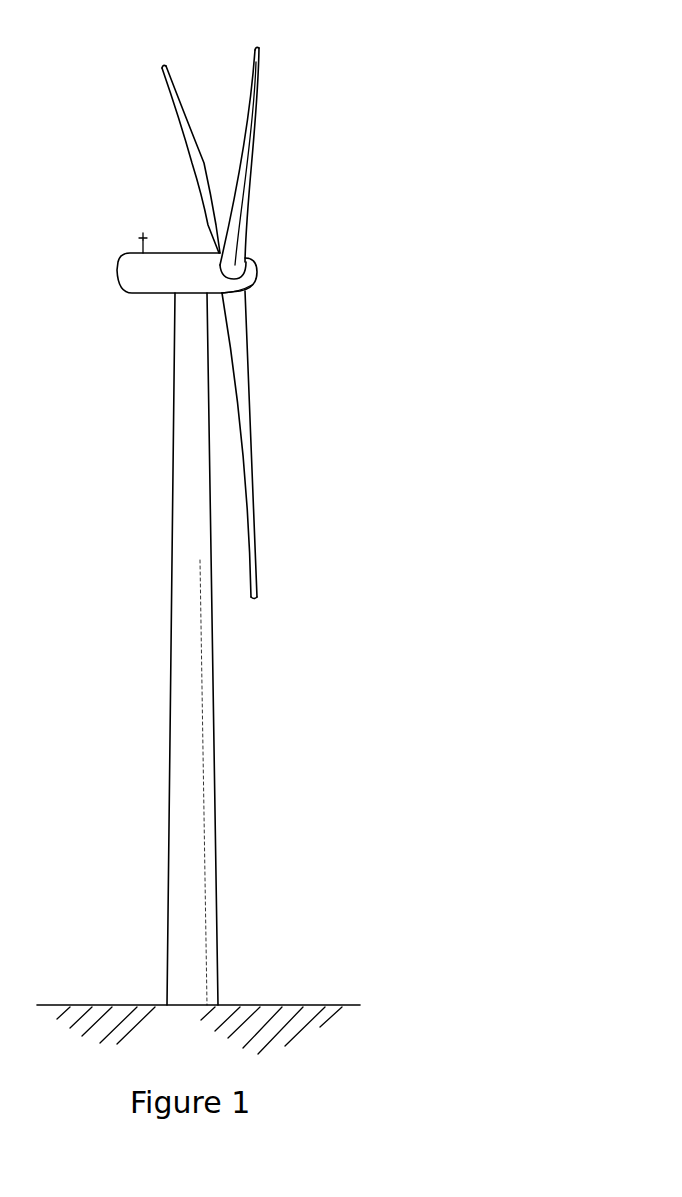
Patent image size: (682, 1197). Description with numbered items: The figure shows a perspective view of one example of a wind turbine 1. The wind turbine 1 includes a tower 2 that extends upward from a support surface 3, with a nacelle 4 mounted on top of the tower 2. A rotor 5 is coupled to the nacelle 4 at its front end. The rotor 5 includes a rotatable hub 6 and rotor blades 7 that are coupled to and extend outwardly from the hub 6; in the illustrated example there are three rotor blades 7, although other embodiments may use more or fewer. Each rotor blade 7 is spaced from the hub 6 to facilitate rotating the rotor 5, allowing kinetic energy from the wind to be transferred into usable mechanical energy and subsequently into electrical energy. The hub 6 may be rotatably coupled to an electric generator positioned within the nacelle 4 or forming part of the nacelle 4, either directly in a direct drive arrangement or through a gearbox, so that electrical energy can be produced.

The wind turbine 1 is at (358, 115).
The tower 2 is at (180, 748).
The support surface 3 is at (107, 1005).
The nacelle 4 is at (155, 295).
The rotor 5 is at (260, 247).
The rotatable hub 6 is at (248, 282).
The rotor blade 7 is at (200, 146).